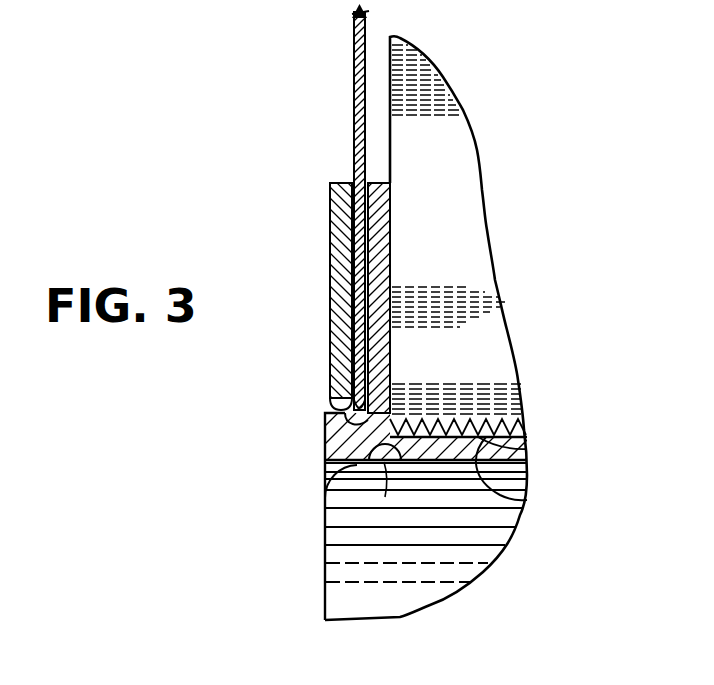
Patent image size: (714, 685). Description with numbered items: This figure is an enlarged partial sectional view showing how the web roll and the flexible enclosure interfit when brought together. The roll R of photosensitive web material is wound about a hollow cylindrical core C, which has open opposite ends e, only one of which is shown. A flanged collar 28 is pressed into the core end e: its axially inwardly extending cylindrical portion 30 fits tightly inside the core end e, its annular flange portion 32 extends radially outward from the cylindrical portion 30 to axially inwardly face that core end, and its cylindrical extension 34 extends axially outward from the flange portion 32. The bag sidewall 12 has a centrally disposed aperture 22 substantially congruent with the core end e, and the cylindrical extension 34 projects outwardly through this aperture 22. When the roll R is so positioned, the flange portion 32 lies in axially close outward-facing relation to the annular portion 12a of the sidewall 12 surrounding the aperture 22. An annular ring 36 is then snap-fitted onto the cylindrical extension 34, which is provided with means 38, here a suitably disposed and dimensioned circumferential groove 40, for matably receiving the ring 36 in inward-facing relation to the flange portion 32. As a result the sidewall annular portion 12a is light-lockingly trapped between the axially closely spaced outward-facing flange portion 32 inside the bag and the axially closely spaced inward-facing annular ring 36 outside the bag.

The sidewall 12 is at (354, 83).
The annular portion 12a is at (375, 292).
The annular ring 36 is at (330, 200).
The annular flange portion 32 is at (385, 222).
The circumferential groove 40 is at (333, 390).
The means for matably receiving ring 38 is at (335, 436).
The cylindrical extension 34 is at (326, 452).
The aperture 22 is at (400, 378).
The flanged collar 28 is at (326, 505).
The cylindrical portion 30 is at (522, 500).
The roll R is at (505, 306).
The core C is at (527, 449).
The core end e is at (379, 493).